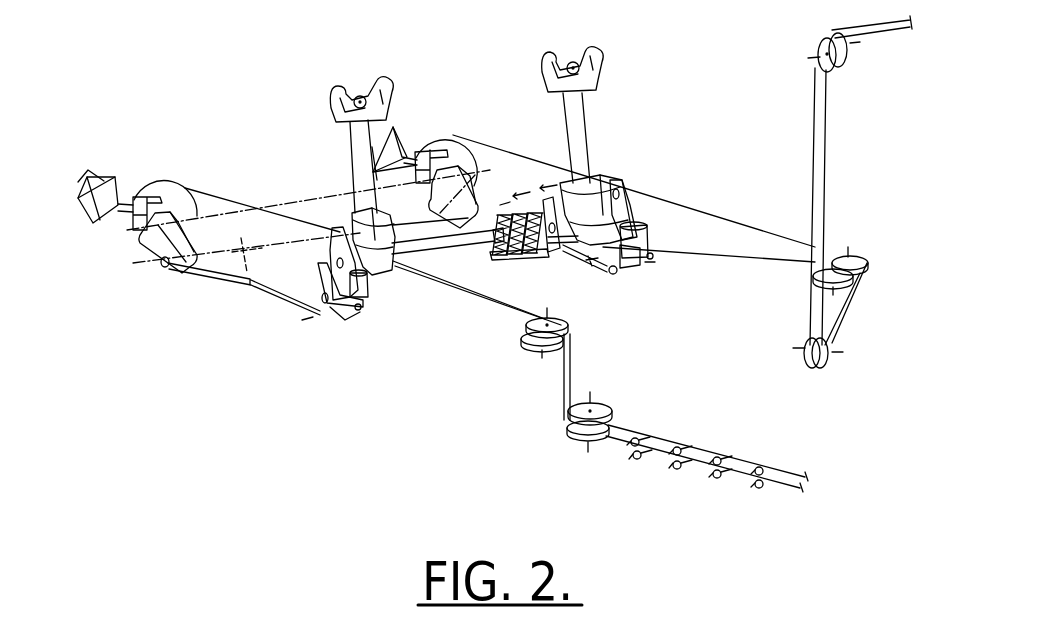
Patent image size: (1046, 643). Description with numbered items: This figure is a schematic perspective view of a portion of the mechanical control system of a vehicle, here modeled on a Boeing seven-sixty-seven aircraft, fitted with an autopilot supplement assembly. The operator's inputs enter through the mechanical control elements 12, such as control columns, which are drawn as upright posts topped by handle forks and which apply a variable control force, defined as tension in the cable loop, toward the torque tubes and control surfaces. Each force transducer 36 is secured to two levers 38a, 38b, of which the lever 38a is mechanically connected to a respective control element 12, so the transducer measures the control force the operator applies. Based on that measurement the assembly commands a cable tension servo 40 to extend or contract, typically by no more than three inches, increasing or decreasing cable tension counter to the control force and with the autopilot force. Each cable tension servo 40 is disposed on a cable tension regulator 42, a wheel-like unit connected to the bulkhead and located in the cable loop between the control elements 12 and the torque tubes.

The mechanical control element 12 is at (340, 68).
The force transducer 36 is at (375, 287).
The lever 38a is at (327, 218).
The lever 38b is at (341, 320).
The cable tension servo 40 is at (105, 176).
The cable tension regulator 42 is at (157, 160).